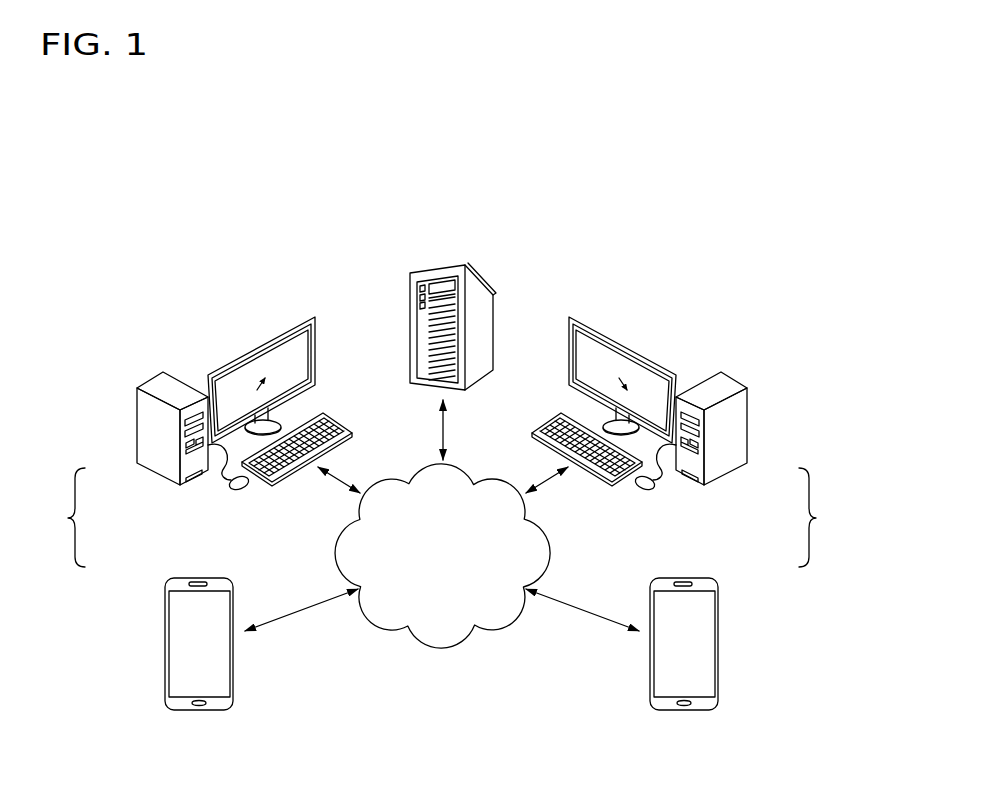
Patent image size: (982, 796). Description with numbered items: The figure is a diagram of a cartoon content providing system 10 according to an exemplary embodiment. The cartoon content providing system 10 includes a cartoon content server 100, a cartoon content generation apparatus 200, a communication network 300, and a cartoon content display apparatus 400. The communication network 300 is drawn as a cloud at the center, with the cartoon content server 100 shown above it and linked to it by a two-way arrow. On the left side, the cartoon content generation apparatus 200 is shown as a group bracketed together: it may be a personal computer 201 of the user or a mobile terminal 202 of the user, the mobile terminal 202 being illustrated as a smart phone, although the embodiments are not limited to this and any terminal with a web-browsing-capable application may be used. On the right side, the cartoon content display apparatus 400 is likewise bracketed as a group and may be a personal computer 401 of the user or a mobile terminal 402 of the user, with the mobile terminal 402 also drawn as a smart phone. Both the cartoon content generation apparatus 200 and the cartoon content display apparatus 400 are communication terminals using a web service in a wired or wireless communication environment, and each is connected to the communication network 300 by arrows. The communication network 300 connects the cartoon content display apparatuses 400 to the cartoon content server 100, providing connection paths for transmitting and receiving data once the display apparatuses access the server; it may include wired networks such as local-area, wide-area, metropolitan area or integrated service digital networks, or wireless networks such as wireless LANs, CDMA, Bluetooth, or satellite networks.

The cartoon content providing system 10 is at (679, 208).
The cartoon content server 100 is at (478, 278).
The cartoon content generation apparatus 200 is at (55, 517).
The personal computer 201 is at (137, 423).
The mobile terminal 202 is at (164, 637).
The communication network 300 is at (550, 555).
The cartoon content display apparatus 400 is at (829, 517).
The personal computer 401 is at (747, 423).
The mobile terminal 402 is at (719, 637).